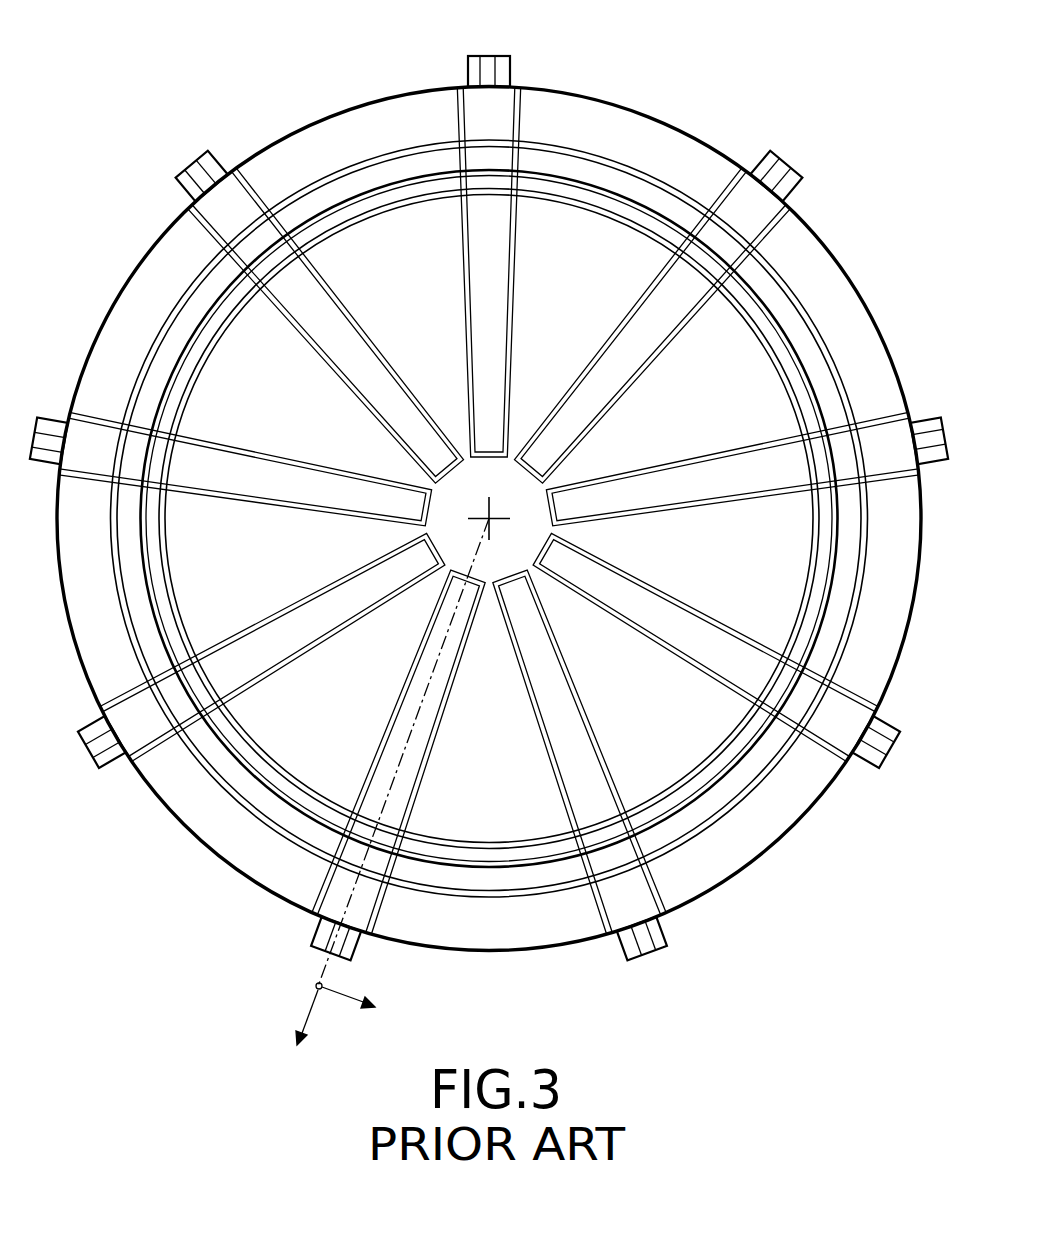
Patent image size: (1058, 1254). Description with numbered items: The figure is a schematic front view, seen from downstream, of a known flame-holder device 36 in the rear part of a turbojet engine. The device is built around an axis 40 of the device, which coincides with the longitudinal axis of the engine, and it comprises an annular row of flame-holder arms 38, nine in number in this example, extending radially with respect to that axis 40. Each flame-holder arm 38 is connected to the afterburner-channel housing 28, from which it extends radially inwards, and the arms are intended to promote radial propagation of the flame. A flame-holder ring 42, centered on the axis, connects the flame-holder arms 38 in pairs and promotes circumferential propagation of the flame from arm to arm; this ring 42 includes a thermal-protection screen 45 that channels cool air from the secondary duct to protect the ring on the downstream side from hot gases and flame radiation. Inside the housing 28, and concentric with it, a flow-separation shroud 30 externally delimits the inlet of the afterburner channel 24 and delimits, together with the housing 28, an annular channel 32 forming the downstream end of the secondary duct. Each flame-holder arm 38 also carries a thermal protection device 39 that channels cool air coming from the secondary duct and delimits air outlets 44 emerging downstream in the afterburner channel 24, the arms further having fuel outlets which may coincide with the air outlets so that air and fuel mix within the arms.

The afterburner-channel housing 28 is at (565, 92).
The flow-separation shroud 30 is at (432, 190).
The annular channel 32 is at (382, 155).
The flame-holder device 36 is at (820, 198).
The flame-holder arm 38 is at (262, 195).
The thermal protection device 39 is at (675, 305).
The flame-holder ring 42 is at (605, 155).
The air outlet 44 is at (507, 310).
The thermal-protection screen 45 is at (662, 203).
The afterburner channel 24 is at (430, 326).
The axis of the device 40 is at (489, 519).